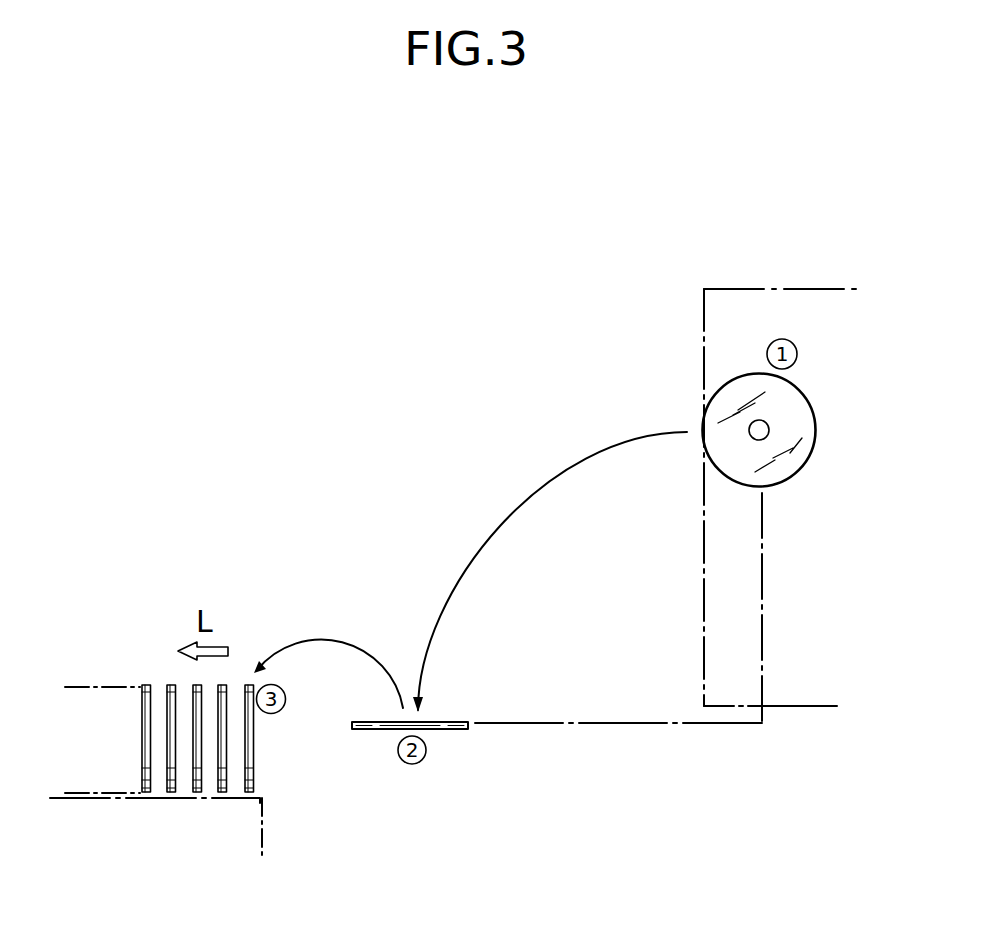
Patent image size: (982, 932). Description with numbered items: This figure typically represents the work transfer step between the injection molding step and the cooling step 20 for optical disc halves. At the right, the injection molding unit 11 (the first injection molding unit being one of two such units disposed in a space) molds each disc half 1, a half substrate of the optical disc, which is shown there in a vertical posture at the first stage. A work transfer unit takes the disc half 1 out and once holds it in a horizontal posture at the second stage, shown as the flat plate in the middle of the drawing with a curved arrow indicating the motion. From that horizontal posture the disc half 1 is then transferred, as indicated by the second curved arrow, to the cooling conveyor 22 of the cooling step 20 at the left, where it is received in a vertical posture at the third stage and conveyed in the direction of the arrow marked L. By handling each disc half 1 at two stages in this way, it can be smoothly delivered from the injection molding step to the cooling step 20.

The injection molding unit 11 is at (733, 289).
The disc half 1 is at (720, 390).
The cooling step 20 is at (157, 819).
The cooling conveyor 22 is at (262, 812).